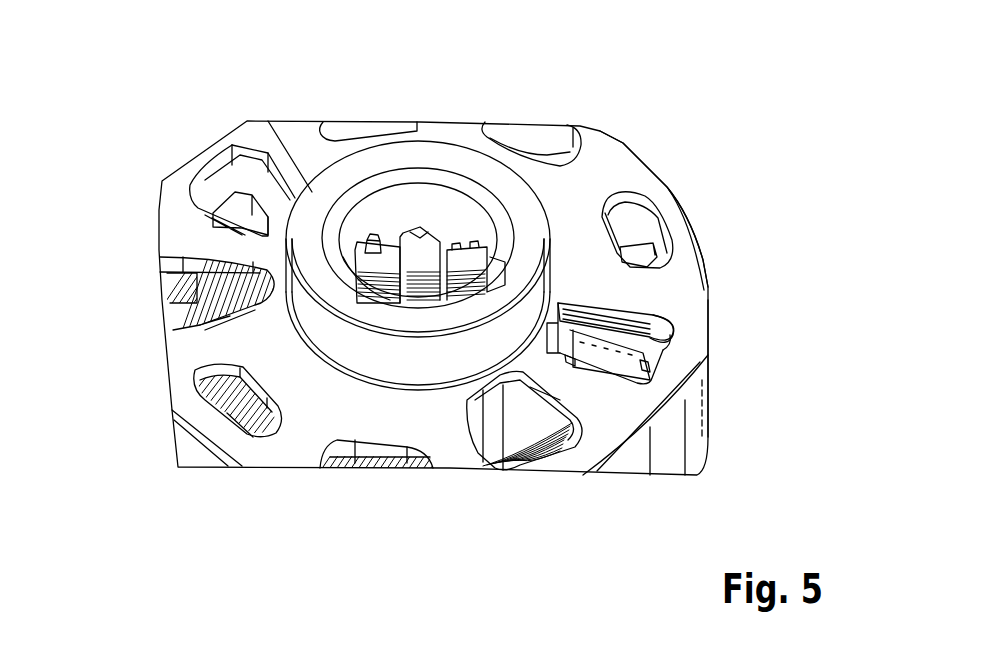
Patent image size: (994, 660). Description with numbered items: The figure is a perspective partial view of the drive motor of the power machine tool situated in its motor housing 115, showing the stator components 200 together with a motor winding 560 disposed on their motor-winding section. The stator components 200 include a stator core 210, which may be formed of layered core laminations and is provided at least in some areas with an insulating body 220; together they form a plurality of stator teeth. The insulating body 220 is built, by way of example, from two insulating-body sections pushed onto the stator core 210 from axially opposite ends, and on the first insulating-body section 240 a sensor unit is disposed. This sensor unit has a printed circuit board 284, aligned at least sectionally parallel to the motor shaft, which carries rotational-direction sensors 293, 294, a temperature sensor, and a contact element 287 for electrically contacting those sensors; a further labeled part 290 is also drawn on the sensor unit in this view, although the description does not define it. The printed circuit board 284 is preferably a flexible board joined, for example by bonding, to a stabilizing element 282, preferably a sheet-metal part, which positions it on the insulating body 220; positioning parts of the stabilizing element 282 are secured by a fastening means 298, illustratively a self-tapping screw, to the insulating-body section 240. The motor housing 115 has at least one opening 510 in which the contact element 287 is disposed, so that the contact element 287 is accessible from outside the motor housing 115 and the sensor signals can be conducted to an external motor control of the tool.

The stator components 200 is at (160, 96).
The motor housing 115 is at (637, 173).
The stator core 210 is at (440, 245).
The insulating body 220 is at (170, 312).
The first insulating-body section 240 is at (190, 300).
The stabilizing element 282 is at (558, 303).
The printed circuit board 284 is at (558, 310).
The contact element 287 is at (663, 347).
The contact tab 290 is at (372, 245).
The rotational-direction sensor 293 is at (367, 250).
The rotational-direction sensor 294 is at (467, 247).
The fastening means 298 is at (420, 228).
The opening 510 is at (667, 318).
The motor winding 560 is at (203, 330).